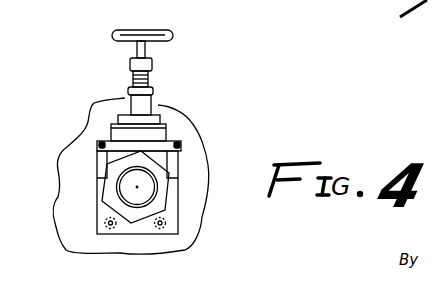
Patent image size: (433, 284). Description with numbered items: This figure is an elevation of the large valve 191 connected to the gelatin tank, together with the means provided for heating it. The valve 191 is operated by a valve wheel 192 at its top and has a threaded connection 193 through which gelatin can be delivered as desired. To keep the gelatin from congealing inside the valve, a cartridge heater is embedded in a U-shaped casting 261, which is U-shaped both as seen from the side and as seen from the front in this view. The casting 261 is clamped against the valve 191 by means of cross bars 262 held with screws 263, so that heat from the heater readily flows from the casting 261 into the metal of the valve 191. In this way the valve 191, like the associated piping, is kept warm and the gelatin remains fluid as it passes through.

The valve wheel 192 is at (155, 30).
The cross bars 262 is at (153, 148).
The screws 263 is at (103, 143).
The large valve 191 is at (116, 183).
The threaded connection 193 is at (154, 188).
The U-shaped casting 261 is at (101, 206).